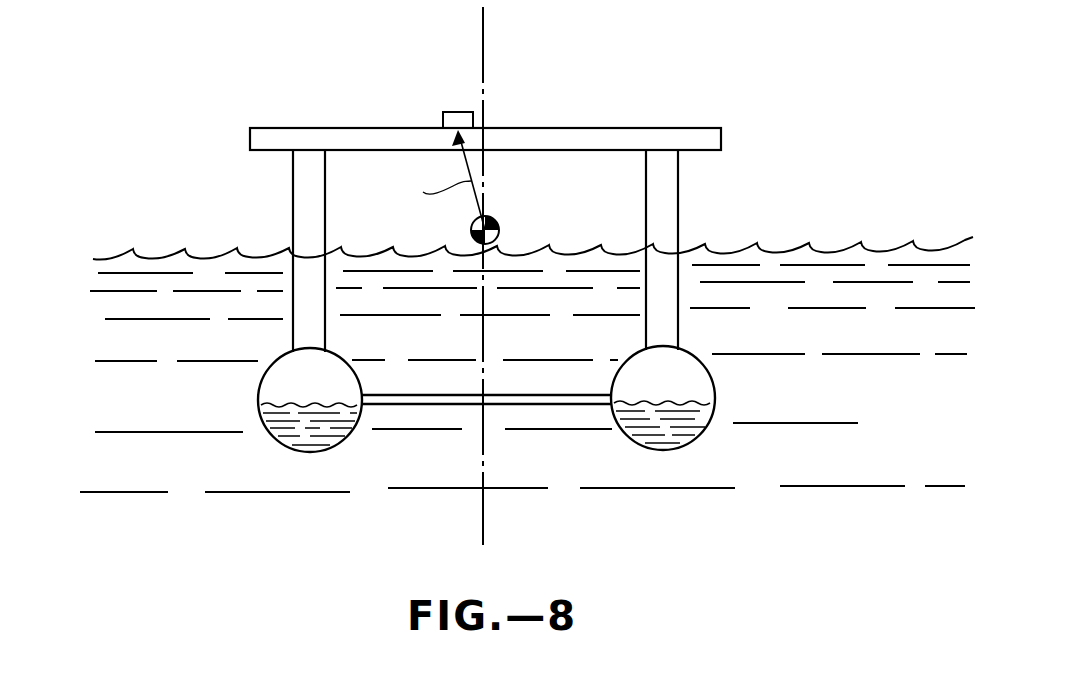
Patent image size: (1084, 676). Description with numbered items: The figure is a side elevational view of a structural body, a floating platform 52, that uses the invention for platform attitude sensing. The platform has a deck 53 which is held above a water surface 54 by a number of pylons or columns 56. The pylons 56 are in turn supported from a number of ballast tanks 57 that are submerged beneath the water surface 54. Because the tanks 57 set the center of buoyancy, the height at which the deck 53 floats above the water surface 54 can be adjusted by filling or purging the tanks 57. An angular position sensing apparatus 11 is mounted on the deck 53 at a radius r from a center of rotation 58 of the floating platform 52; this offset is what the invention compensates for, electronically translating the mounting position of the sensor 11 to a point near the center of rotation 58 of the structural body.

The angular position sensor 11 is at (452, 112).
The floating platform 52 is at (486, 247).
The deck 53 is at (655, 128).
The water surface 54 is at (815, 246).
The pylons 56 is at (293, 190).
The ballast tanks 57 is at (258, 392).
The center of rotation 58 is at (543, 112).